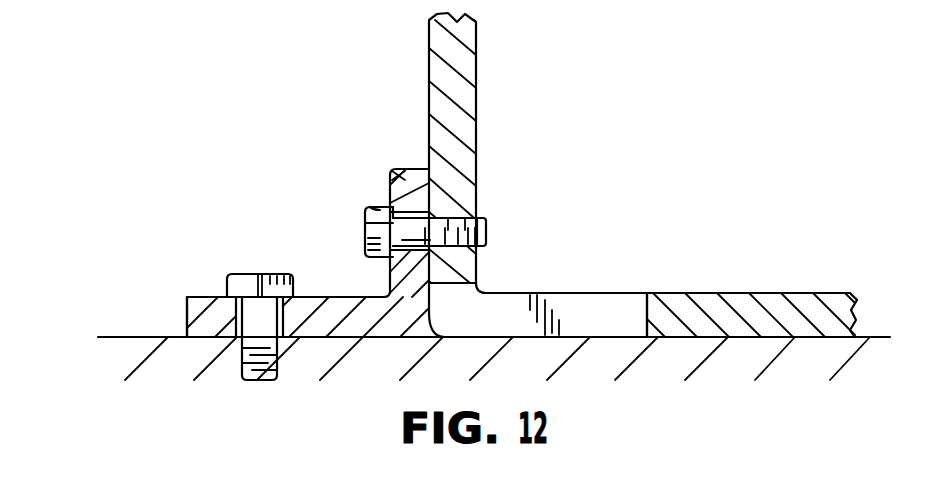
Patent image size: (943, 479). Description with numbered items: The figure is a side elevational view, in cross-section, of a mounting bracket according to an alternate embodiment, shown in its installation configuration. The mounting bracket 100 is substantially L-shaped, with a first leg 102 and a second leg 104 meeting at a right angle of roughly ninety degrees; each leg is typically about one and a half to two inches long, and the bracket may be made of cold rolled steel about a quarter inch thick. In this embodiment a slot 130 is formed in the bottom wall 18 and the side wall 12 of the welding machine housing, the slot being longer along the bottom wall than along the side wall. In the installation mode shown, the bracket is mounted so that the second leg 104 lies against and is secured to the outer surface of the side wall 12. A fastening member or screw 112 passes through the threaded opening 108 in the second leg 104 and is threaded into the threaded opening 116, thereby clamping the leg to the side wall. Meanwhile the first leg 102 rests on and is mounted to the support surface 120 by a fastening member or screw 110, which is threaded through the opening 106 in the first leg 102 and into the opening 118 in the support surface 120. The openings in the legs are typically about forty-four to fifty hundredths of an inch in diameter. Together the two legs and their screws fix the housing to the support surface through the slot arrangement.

The side wall 12 is at (443, 62).
The bottom wall 18 is at (735, 300).
The mounting bracket 100 is at (189, 293).
The first leg 102 is at (205, 318).
The second leg 104 is at (391, 171).
The opening 106 is at (271, 316).
The threaded opening 108 is at (367, 219).
The fastening member 110 is at (247, 280).
The fastening member 112 is at (372, 210).
The threaded opening 116 is at (487, 229).
The opening 118 is at (243, 350).
The support surface 120 is at (132, 337).
The slot 130 is at (590, 294).